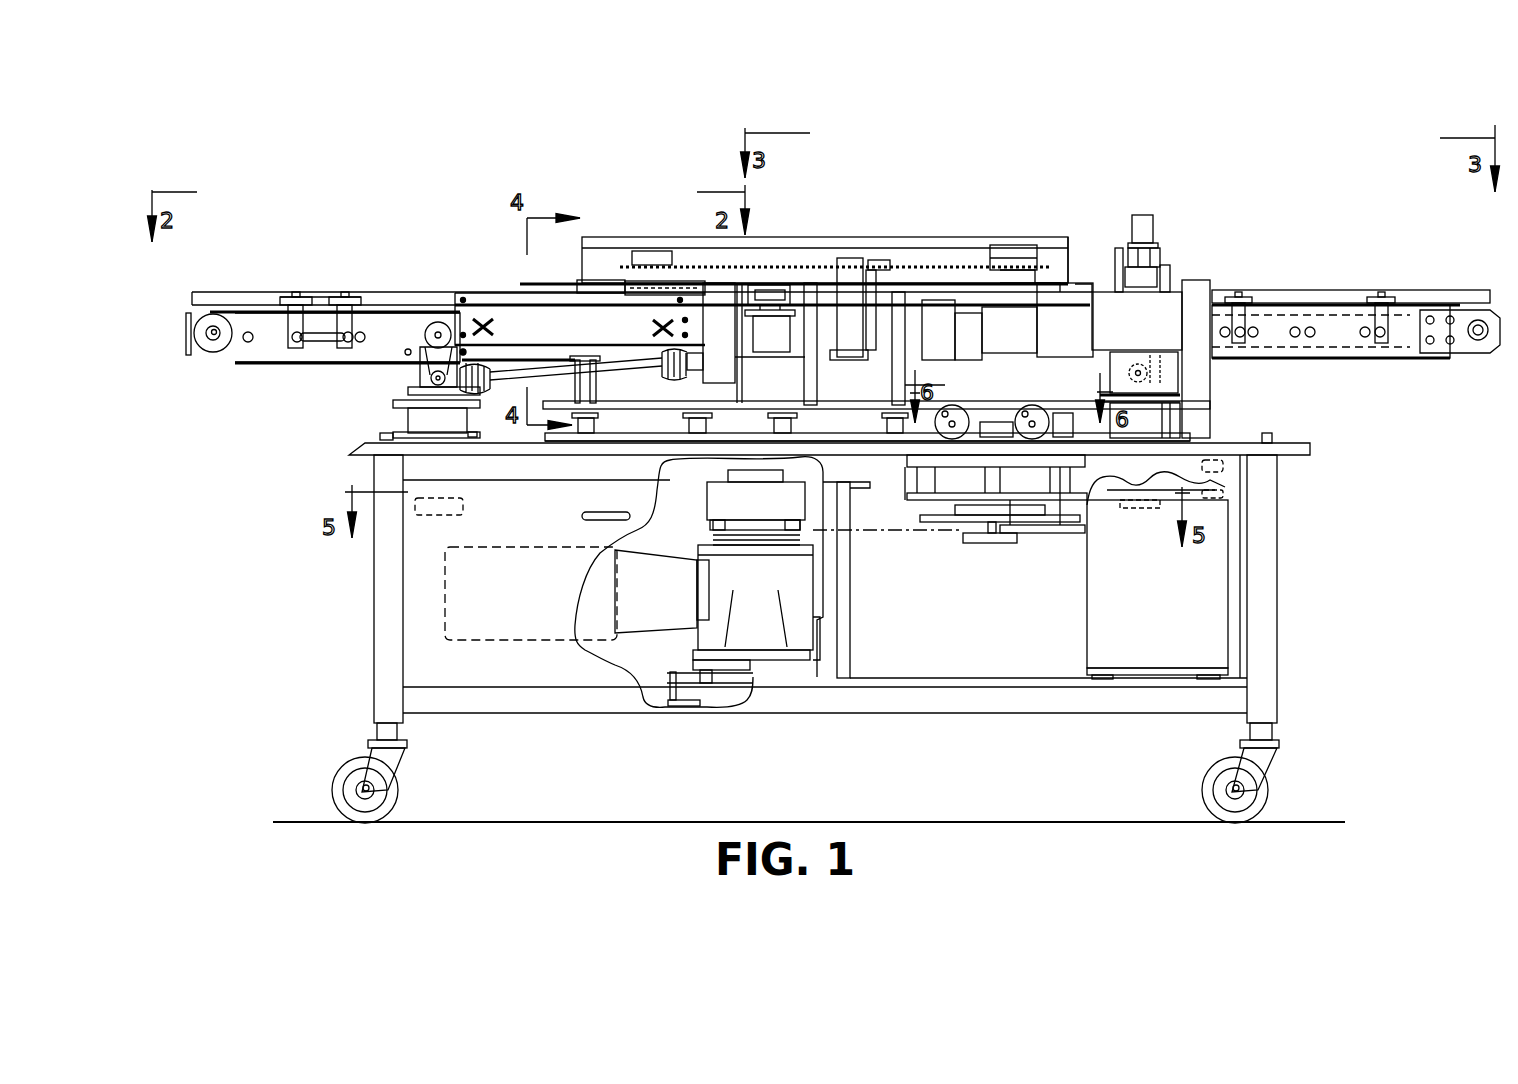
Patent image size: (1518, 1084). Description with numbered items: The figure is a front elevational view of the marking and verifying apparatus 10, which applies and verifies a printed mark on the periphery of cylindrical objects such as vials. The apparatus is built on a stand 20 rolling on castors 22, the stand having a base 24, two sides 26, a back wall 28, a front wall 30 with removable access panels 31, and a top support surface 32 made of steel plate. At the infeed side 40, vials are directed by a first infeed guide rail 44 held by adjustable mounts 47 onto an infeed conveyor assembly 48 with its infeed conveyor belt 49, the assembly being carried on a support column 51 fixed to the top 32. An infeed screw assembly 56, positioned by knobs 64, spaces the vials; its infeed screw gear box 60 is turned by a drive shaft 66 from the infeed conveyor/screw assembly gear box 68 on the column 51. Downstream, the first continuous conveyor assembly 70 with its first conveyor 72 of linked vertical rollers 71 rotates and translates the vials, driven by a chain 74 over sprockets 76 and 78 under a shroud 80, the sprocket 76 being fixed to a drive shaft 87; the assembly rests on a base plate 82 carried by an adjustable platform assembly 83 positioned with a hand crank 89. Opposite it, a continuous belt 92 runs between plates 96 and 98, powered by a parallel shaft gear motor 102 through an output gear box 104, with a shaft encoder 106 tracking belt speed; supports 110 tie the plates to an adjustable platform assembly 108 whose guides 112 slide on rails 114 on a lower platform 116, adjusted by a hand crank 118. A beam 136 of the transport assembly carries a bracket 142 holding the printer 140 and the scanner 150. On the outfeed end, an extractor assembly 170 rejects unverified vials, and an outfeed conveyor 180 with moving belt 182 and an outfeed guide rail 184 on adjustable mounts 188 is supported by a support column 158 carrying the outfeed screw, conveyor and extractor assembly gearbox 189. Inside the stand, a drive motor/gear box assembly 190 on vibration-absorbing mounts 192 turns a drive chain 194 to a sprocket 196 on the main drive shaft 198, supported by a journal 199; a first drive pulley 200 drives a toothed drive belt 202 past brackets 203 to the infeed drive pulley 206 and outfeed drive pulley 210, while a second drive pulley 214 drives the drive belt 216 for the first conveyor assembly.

The marking and verifying apparatus 10 is at (292, 445).
The stand 20 is at (1280, 612).
The castors 22 is at (400, 782).
The base 24 is at (588, 714).
The sides 26 is at (374, 627).
The back wall 28 is at (727, 570).
The front wall 30 is at (522, 676).
The removable access panels 31 is at (647, 580).
The top support surface 32 is at (1250, 440).
The infeed side 40 is at (245, 406).
The first infeed guide rail 44 is at (259, 292).
The adjustable mounts 47 is at (292, 295).
The infeed conveyor assembly 48 is at (313, 278).
The infeed conveyor belt 49 is at (207, 355).
The support column 51 is at (407, 418).
The infeed screw assembly 56 is at (530, 280).
The infeed screw gear box 60 is at (728, 358).
The knobs 64 is at (482, 317).
The drive shaft 66 is at (630, 363).
The infeed conveyor/screw assembly gear box 68 is at (413, 367).
The first continuous conveyor assembly 70 is at (648, 280).
The linked vertical rollers 71 is at (650, 280).
The first conveyor 72 is at (1027, 268).
The chain 74 is at (1027, 263).
The sprocket 76 is at (687, 280).
The sprocket 78 is at (990, 273).
The shroud 80 is at (958, 237).
The base plate 82 is at (604, 388).
The adjustable platform assembly 83 is at (600, 435).
The drive shaft 87 is at (993, 390).
The hand crank 89 is at (1037, 410).
The continuous belt 92 is at (778, 285).
The plate 96 is at (773, 302).
The plate 98 is at (768, 283).
The parallel shaft gear motor 102 is at (1110, 300).
The output gear box 104 is at (938, 320).
The shaft encoder 106 is at (782, 340).
The adjustable platform assembly 108 is at (838, 430).
The supports 110 is at (877, 367).
The guides 112 is at (1077, 417).
The rails 114 is at (1087, 497).
The lower platform 116 is at (657, 437).
The hand crank 118 is at (935, 382).
The beam 136 is at (833, 352).
The printer 140 is at (849, 258).
The bracket 142 is at (881, 260).
The scanner 150 is at (873, 260).
The support column 158 is at (1137, 412).
The extractor assembly 170 is at (1168, 248).
The outfeed conveyor 180 is at (1265, 297).
The moving belt 182 is at (1347, 320).
The outfeed guide rail 184 is at (1414, 297).
The adjustable mounts 188 is at (1238, 293).
The outfeed screw, conveyor and extractor assembly gearbox 189 is at (1173, 377).
The drive motor/gear box assembly 190 is at (662, 591).
The vibration-absorbing mounts 192 is at (690, 706).
The drive chain 194 is at (905, 500).
The sprocket 196 is at (1007, 527).
The main drive shaft 198 is at (1020, 510).
The journal 199 is at (1003, 395).
The first drive pulley 200 is at (1010, 500).
The toothed drive belt 202 is at (907, 457).
The brackets 203 is at (1090, 507).
The infeed drive pulley 206 is at (464, 504).
The outfeed drive pulley 210 is at (1140, 510).
The second drive pulley 214 is at (1062, 430).
The drive belt 216 is at (950, 517).